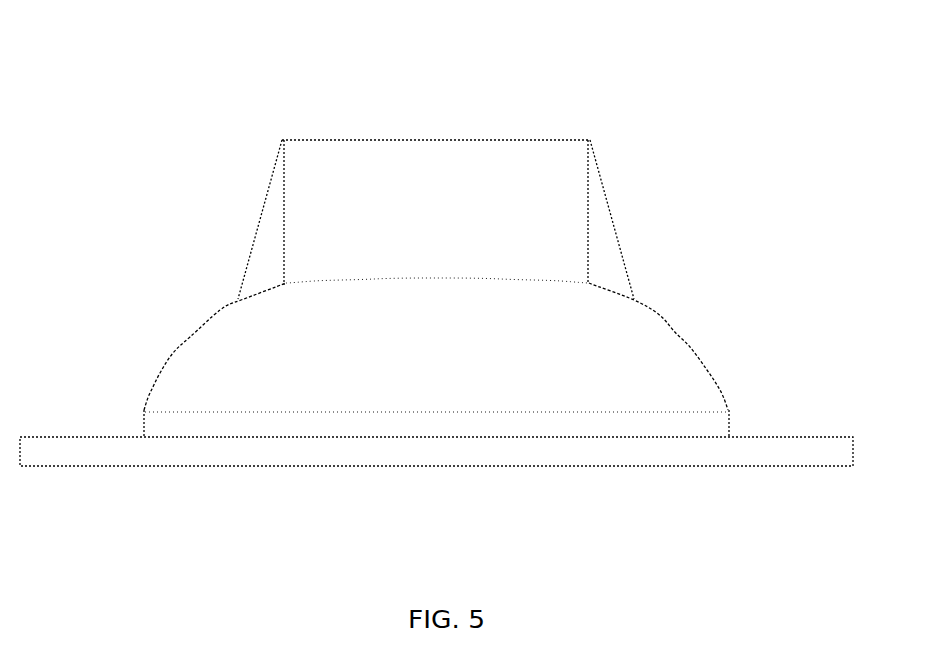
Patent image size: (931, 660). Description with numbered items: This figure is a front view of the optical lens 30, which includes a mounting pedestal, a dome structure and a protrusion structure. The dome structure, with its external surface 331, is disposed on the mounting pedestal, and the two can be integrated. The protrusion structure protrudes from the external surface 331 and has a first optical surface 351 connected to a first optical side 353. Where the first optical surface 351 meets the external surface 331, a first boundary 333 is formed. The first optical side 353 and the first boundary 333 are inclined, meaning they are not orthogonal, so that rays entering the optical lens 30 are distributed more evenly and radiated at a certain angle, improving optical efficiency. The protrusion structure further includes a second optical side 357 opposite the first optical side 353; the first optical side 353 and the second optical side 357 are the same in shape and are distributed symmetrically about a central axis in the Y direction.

The optical lens 30 is at (770, 563).
The external surface 331 is at (623, 347).
The first boundary 333 is at (335, 278).
The first optical surface 351 is at (445, 242).
The first optical side 353 is at (272, 260).
The second optical side 357 is at (610, 252).